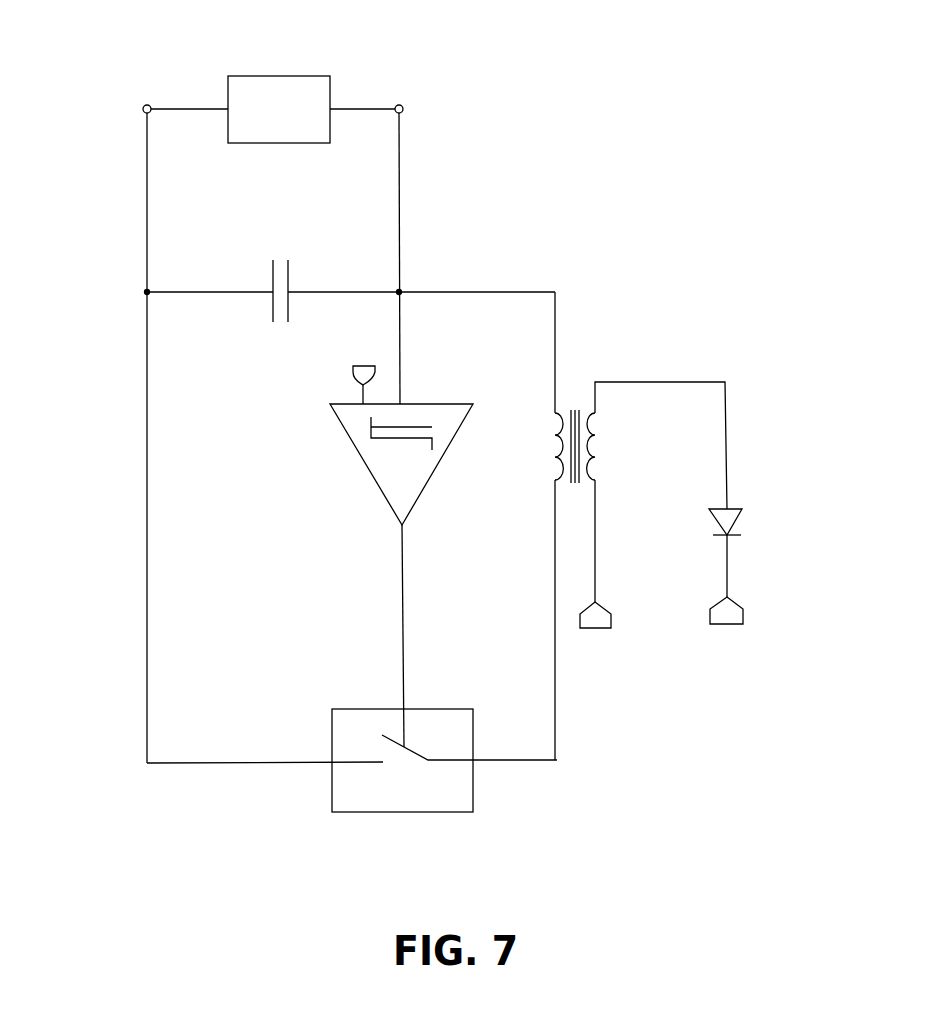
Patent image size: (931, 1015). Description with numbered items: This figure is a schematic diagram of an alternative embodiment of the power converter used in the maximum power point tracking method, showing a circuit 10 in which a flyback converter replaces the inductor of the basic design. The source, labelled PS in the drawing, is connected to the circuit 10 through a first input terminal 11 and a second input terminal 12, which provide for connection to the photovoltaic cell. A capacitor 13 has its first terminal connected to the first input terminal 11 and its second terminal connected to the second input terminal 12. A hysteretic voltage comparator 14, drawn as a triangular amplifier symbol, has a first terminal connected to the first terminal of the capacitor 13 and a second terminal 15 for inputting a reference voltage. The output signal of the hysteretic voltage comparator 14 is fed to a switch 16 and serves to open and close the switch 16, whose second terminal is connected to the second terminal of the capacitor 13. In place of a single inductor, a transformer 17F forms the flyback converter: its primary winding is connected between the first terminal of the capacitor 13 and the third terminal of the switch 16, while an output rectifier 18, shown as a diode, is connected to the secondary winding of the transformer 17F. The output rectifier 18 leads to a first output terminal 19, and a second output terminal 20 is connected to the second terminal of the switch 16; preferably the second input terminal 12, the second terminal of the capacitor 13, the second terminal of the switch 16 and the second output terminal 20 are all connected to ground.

The power supply PS is at (286, 98).
The circuit 10 is at (493, 233).
The first input terminal 11 is at (403, 108).
The second input terminal 12 is at (143, 109).
The capacitor 13 is at (279, 326).
The hysteretic voltage comparator 14 is at (405, 468).
The second terminal 15 is at (361, 384).
The switch 16 is at (408, 795).
The transformer 17F is at (575, 375).
The output rectifier 18 is at (732, 522).
The first output terminal 19 is at (727, 625).
The second output terminal 20 is at (596, 629).